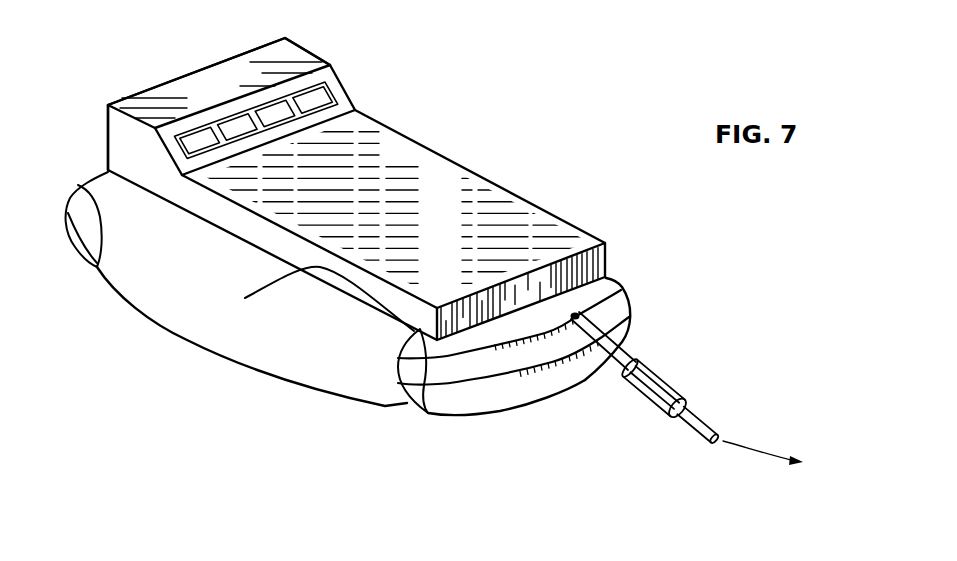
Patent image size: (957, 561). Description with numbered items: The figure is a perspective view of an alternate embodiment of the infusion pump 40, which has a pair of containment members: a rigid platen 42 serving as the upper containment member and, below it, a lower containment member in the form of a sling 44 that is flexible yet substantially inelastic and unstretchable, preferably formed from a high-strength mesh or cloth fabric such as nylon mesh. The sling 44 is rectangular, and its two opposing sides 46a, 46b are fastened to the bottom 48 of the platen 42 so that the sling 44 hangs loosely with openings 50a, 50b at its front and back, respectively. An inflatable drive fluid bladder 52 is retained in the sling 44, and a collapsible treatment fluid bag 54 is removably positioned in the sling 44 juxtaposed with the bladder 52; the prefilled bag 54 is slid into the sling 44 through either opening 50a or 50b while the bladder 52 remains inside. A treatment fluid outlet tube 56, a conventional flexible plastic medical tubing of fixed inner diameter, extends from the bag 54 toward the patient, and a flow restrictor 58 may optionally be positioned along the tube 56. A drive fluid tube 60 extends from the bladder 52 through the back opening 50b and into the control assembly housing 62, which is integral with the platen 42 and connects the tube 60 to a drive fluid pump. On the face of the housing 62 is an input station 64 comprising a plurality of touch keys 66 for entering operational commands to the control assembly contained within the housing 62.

The infusion pump 40 is at (468, 78).
The rigid platen 42 is at (563, 227).
The sling 44 is at (177, 280).
The opposing side 46a is at (418, 393).
The opposing side 46b is at (612, 287).
The bottom of platen 48 is at (245, 298).
The opening 50a is at (418, 406).
The opening 50b is at (78, 185).
The inflatable drive fluid bladder 52 is at (548, 383).
The collapsible treatment fluid bag 54 is at (615, 308).
The treatment fluid outlet tube 56 is at (622, 356).
The flow restrictor 58 is at (662, 373).
The drive fluid tube 60 is at (106, 167).
The control assembly housing 62 is at (297, 61).
The input station 64 is at (246, 112).
The touch keys 66 is at (225, 132).